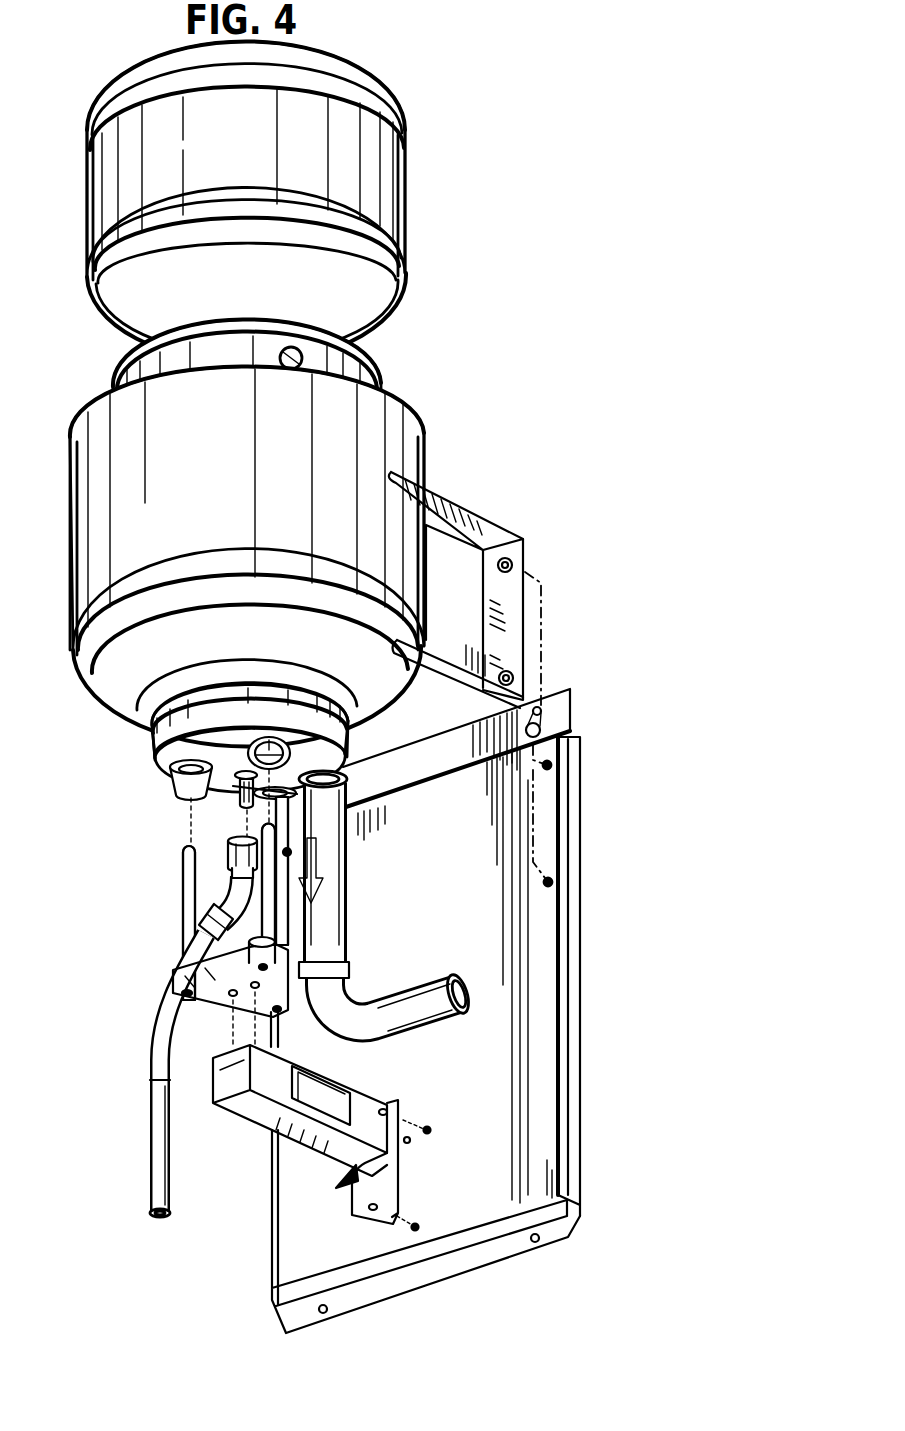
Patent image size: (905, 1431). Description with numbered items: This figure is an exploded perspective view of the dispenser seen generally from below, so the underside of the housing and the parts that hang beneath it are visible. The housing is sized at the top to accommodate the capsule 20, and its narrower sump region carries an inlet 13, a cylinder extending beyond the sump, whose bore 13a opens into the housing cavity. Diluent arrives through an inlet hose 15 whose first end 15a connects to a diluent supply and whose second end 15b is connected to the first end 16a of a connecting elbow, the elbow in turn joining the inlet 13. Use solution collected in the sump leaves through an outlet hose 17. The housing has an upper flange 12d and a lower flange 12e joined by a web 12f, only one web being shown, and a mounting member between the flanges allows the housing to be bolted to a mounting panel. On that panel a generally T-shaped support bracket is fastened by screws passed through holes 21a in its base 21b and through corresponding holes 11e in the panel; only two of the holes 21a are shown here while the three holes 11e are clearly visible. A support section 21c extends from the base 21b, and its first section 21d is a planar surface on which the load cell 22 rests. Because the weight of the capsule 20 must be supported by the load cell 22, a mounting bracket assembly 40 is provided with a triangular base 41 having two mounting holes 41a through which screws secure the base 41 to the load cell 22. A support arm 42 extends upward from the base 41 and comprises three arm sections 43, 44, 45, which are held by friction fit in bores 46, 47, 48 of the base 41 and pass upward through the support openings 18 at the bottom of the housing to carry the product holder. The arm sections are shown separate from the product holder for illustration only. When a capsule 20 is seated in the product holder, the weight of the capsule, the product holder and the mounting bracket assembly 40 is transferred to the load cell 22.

The capsule 20 is at (102, 181).
The upper flange 12d is at (443, 492).
The web 12f is at (458, 611).
The lower flange 12e is at (445, 700).
The support openings 18 is at (172, 775).
The inlet 13 is at (240, 788).
The bore 13a is at (245, 806).
The arm section 45 is at (184, 858).
The second end 15b is at (220, 916).
The support arm 42 is at (210, 978).
The mounting holes 41a is at (222, 970).
The bore 48 is at (181, 993).
The triangular base 41 is at (210, 996).
The inlet hose 15 is at (150, 1075).
The first end 15a is at (152, 1206).
The load cell 22 is at (233, 1075).
The bore 46 is at (280, 1012).
The mounting bracket assembly 40 is at (309, 1024).
The bore 47 is at (349, 967).
The arm section 44 is at (333, 826).
The outlet hose 17 is at (386, 920).
The first end 16a is at (286, 908).
The arm section 43 is at (270, 929).
The support section 21c is at (281, 1107).
The base 21b is at (375, 1156).
The first section 21d is at (350, 1178).
The holes 21a is at (383, 1106).
The holes 11e is at (429, 1127).